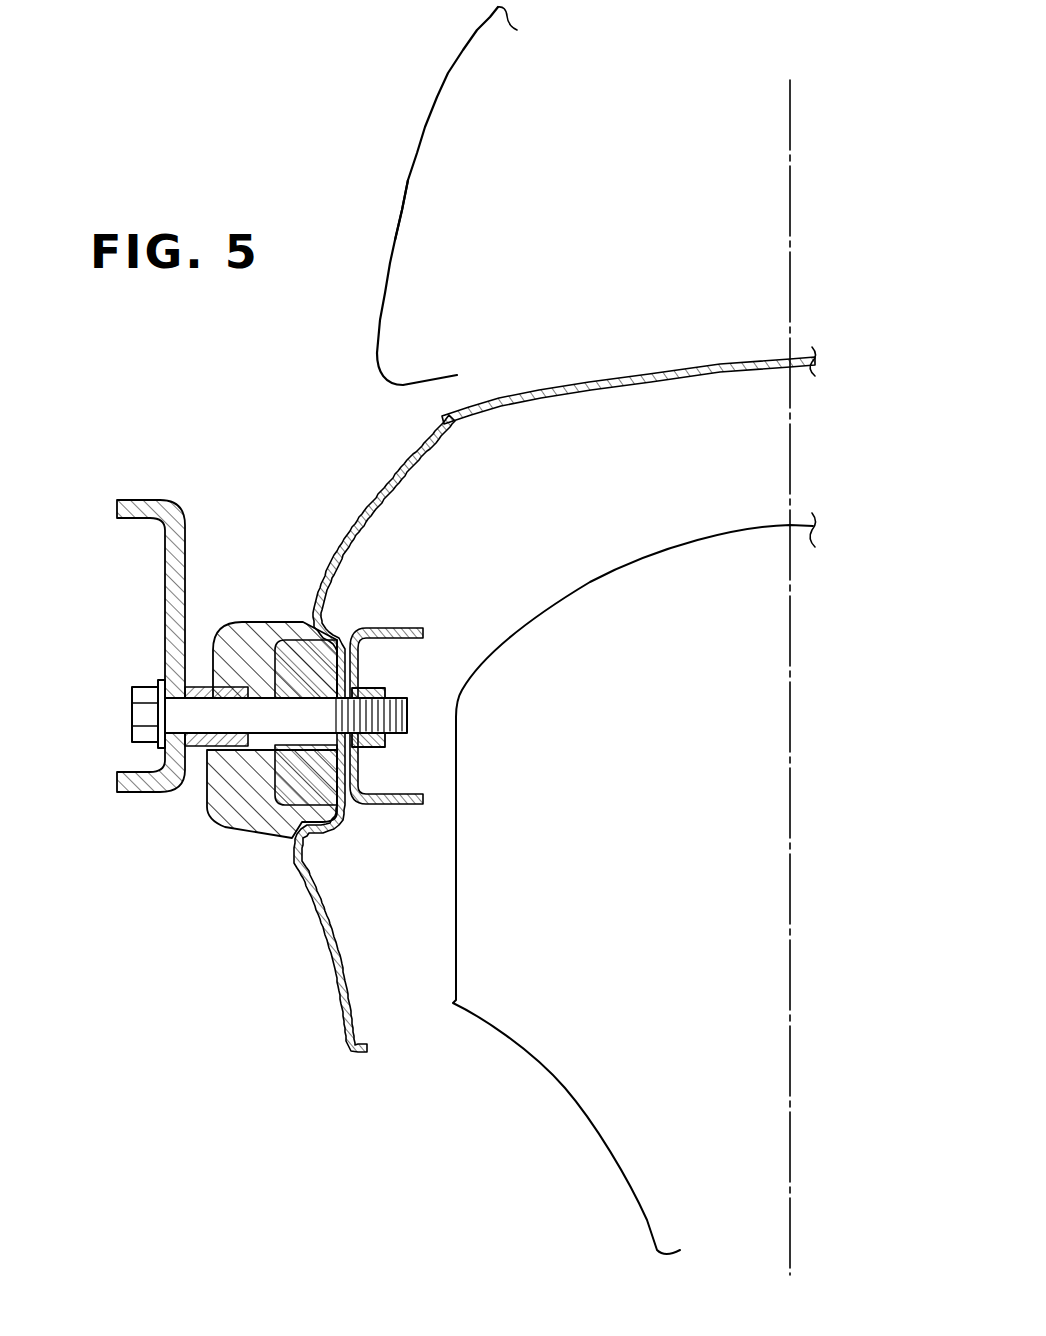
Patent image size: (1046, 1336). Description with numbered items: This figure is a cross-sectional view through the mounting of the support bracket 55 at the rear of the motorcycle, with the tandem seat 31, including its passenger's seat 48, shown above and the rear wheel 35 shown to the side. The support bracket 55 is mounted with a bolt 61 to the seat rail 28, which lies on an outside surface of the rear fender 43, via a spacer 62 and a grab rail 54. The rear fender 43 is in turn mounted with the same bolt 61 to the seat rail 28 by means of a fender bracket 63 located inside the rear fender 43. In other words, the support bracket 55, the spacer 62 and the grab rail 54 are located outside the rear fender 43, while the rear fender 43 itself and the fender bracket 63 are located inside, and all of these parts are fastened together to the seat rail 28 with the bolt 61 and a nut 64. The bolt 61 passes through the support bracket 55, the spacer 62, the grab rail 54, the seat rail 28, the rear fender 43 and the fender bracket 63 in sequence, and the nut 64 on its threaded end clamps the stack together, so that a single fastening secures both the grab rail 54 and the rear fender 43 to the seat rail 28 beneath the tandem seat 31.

The tandem seat 31 is at (407, 117).
The passenger's seat 48 is at (400, 207).
The rear fender 43 is at (733, 357).
The rear wheel 35 is at (763, 523).
The support bracket 55 is at (140, 500).
The grab rail 54 is at (270, 620).
The seat rail 28 is at (334, 624).
The fender bracket 63 is at (410, 623).
The nut 64 is at (380, 785).
The spacer 62 is at (188, 750).
The bolt 61 is at (143, 687).